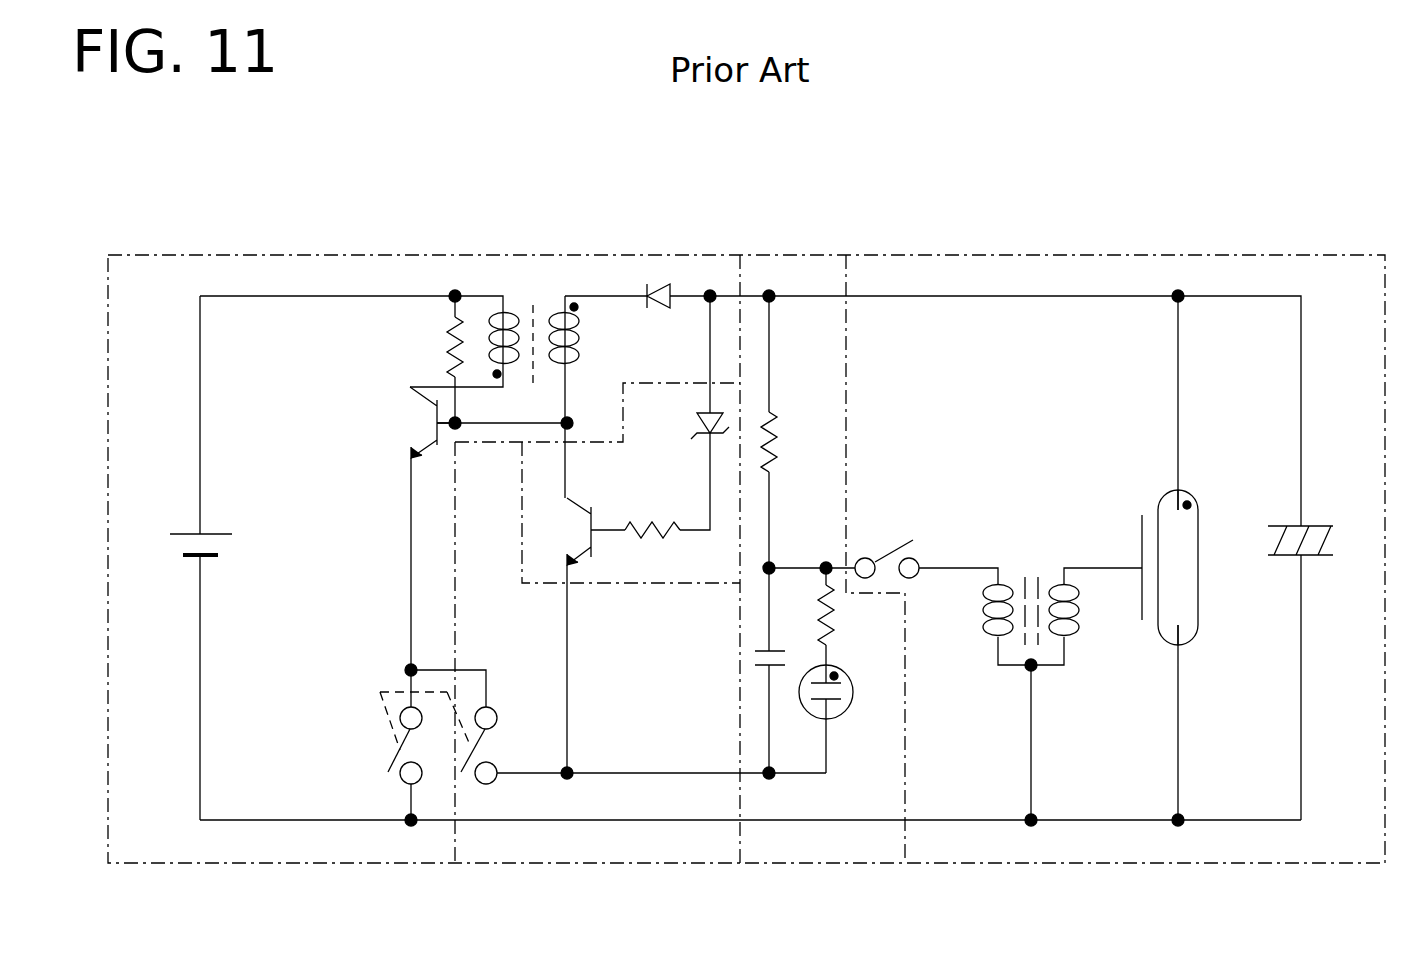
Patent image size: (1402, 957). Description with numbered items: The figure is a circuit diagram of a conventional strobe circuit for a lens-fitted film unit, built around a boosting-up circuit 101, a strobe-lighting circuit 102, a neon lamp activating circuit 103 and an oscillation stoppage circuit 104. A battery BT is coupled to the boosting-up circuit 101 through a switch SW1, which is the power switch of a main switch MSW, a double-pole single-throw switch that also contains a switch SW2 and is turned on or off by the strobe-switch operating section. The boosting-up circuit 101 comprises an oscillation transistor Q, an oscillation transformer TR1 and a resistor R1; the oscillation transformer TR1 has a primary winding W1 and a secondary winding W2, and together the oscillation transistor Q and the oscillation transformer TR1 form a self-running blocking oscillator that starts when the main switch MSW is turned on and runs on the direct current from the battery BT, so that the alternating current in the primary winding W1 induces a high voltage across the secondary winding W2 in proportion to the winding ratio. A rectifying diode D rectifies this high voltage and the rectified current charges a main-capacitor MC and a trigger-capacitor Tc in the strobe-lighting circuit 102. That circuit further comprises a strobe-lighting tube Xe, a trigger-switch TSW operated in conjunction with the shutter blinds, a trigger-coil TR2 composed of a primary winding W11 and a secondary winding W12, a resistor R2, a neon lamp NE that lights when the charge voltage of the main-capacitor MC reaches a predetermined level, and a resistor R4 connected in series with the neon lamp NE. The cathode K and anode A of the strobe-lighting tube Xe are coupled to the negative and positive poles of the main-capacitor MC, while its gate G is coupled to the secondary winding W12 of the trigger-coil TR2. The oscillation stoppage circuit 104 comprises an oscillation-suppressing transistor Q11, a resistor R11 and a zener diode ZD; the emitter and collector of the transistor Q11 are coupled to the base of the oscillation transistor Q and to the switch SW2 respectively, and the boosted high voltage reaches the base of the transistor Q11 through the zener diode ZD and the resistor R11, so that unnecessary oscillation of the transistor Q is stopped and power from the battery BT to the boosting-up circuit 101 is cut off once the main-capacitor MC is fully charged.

The boosting-up circuit 101 is at (275, 255).
The strobe-lighting circuit 102 is at (1060, 255).
The neon lamp activating circuit 103 is at (862, 865).
The oscillation stoppage circuit 104 is at (642, 613).
The battery BT is at (180, 541).
The resistor R1 is at (430, 347).
The oscillation transformer TR1 is at (533, 290).
The primary winding W1 is at (504, 366).
The secondary winding W2 is at (589, 342).
The oscillation transistor Q is at (419, 422).
The rectifying diode D is at (658, 317).
The zener diode ZD is at (689, 429).
The oscillation-suppressing transistor Q11 is at (559, 531).
The resistor R11 is at (652, 551).
The resistor R2 is at (792, 442).
The trigger-capacitor Tc is at (778, 641).
The resistor R4 is at (848, 615).
The neon lamp NE is at (839, 705).
The trigger-switch TSW is at (886, 542).
The trigger-coil TR2 is at (1033, 570).
The primary winding W11 is at (969, 610).
The secondary winding W12 is at (1094, 618).
The strobe-lighting tube Xe is at (1186, 571).
The gate G is at (1122, 567).
The cathode K is at (1195, 488).
The anode A is at (1195, 650).
The main-capacitor MC is at (1309, 523).
The switch SW1 is at (371, 745).
The switch SW2 is at (506, 745).
The main switch MSW is at (430, 787).